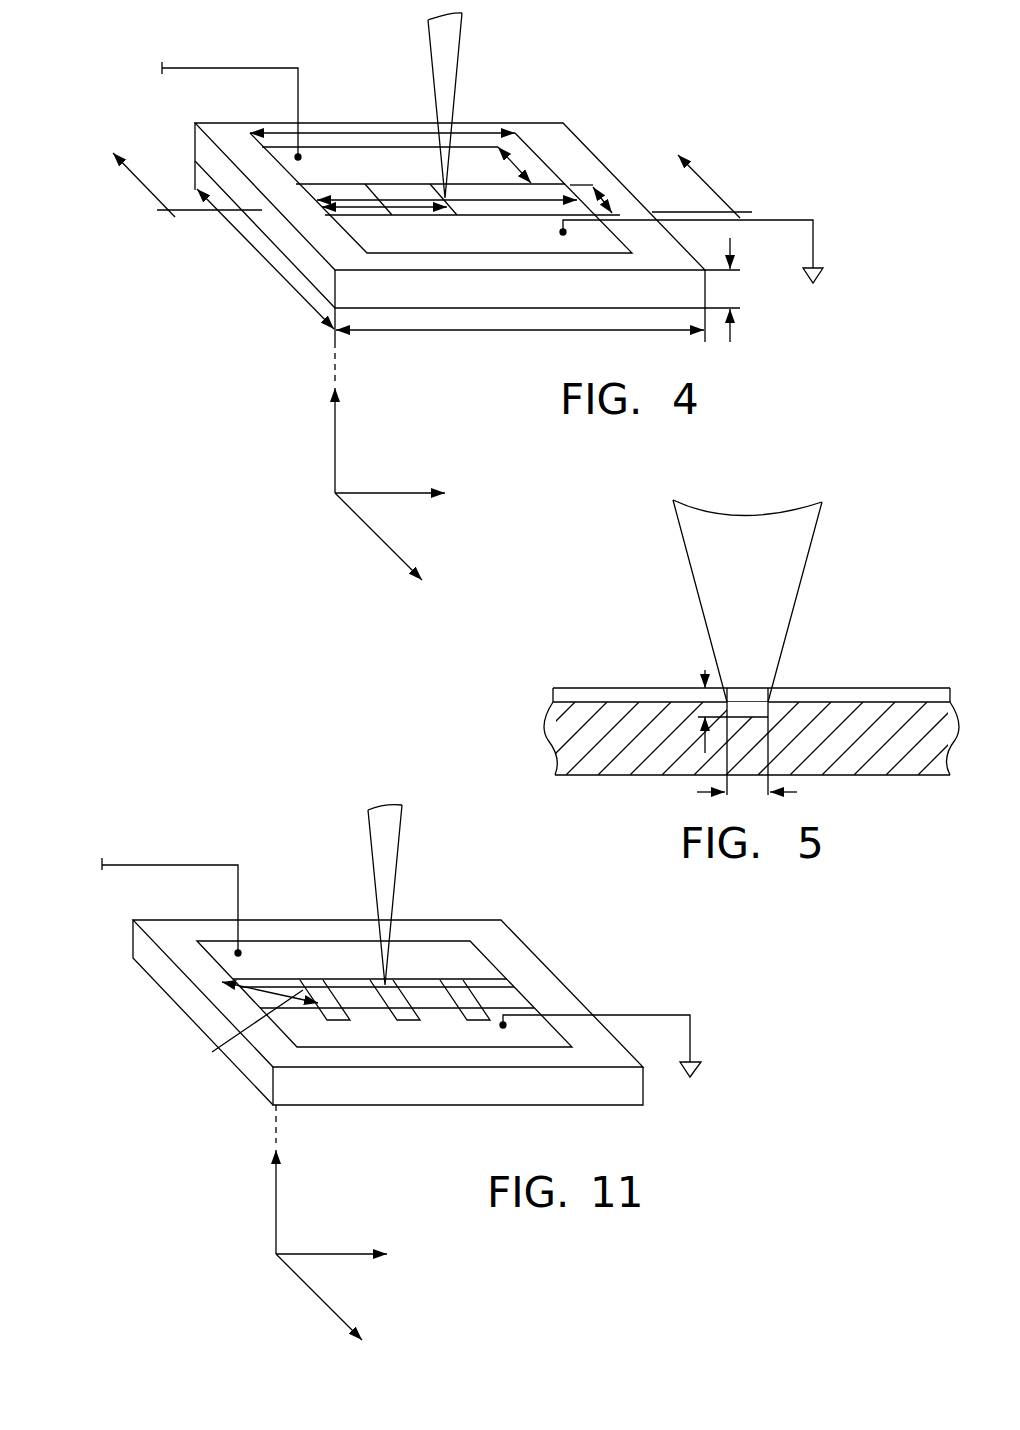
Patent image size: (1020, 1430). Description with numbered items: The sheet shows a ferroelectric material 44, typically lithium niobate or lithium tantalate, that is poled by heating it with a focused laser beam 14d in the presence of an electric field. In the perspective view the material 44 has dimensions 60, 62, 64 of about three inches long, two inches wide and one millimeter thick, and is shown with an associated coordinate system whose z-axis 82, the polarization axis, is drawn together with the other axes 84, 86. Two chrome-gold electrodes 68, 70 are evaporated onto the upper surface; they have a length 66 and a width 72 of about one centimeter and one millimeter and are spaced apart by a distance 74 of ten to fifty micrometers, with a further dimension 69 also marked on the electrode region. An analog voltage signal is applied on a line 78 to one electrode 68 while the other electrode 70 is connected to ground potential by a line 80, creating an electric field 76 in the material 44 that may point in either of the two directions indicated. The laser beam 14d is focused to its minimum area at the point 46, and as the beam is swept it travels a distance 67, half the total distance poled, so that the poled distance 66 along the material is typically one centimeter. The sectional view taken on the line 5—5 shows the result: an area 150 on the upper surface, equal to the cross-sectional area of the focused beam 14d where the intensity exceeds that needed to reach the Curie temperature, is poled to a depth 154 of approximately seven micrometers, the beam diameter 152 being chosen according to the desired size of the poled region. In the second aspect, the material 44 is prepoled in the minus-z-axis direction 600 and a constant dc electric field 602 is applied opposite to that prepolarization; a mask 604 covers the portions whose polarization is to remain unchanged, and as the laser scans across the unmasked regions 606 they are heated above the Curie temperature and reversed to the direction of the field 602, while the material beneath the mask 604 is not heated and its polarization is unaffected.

In FIG. 4, the section line 5 is at (418, 164).
In FIG. 4, the laser beam 14d is at (432, 77).
In FIG. 5, the laser beam 14d is at (702, 617).
In FIG. 11, the laser beam 14d is at (372, 872).
In FIG. 4, the material 44 is at (200, 147).
In FIG. 5, the material 44 is at (556, 725).
In FIG. 11, the material 44 is at (140, 945).
In FIG. 4, the point 46 is at (445, 199).
In FIG. 4, the length dimension 60 is at (508, 333).
In FIG. 4, the width dimension 62 is at (258, 252).
In FIG. 4, the thickness dimension 64 is at (733, 248).
In FIG. 4, the poling distance 66 is at (492, 200).
In FIG. 4, the beam travel distance 67 is at (410, 207).
In FIG. 5, the electrode 68 is at (627, 693).
In FIG. 4, the recess width dimension 69 is at (357, 132).
In FIG. 4, the electrode 70 is at (386, 247).
In FIG. 11, the electrode 70 is at (327, 1040).
In FIG. 4, the electrode width 72 is at (514, 166).
In FIG. 4, the electrode spacing 74 is at (603, 196).
In FIG. 4, the electric field 76 is at (368, 190).
In FIG. 4, the line 78 is at (231, 68).
In FIG. 11, the line 78 is at (170, 863).
In FIG. 4, the line 80 is at (769, 220).
In FIG. 11, the line 80 is at (658, 1015).
In FIG. 4, the z-axis 82 is at (365, 523).
In FIG. 11, the z-axis 82 is at (306, 1287).
In FIG. 4, the x-axis 84 is at (370, 493).
In FIG. 11, the x-axis 84 is at (312, 1253).
In FIG. 4, the y-axis 86 is at (335, 452).
In FIG. 11, the y-axis 86 is at (275, 1215).
In FIG. 5, the poled area 150 is at (755, 707).
In FIG. 5, the beam diameter 152 is at (797, 793).
In FIG. 5, the poling depth 154 is at (702, 745).
In FIG. 11, the pre-polarization direction 600 is at (237, 1003).
In FIG. 11, the dc electric field 602 is at (234, 1033).
In FIG. 11, the mask 604 is at (270, 988).
In FIG. 11, the unmasked regions 606 is at (265, 997).